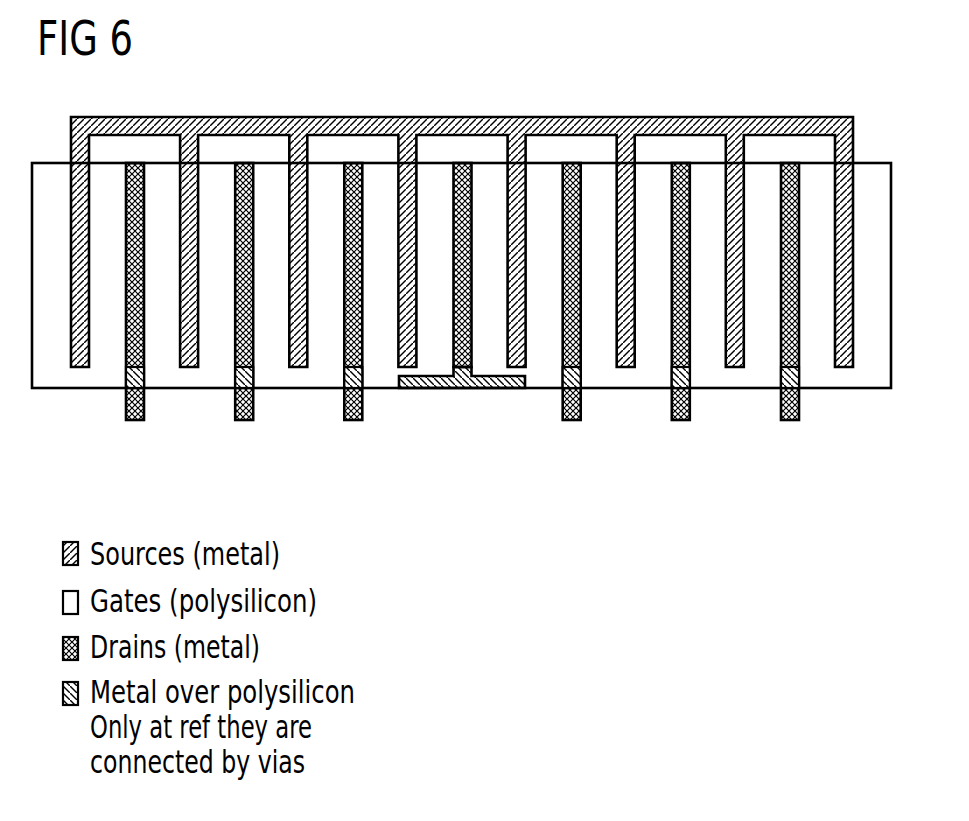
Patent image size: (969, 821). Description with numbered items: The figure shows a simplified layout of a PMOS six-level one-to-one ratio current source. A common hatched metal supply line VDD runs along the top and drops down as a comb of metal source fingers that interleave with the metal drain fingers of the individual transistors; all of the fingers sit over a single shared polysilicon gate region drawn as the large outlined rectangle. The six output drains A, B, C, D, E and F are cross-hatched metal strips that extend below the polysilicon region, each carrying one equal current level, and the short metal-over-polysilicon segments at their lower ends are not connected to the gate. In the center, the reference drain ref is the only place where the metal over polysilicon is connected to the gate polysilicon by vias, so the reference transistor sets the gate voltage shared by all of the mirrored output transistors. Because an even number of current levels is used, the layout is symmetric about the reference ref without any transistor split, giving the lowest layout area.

The supply voltage metal line VDD is at (542, 117).
The drain terminal of current source transistor A is at (134, 312).
The drain terminal of current source transistor B is at (244, 312).
The drain terminal of current source transistor C is at (353, 312).
The drain terminal of current source transistor D is at (572, 312).
The drain terminal of current source transistor E is at (681, 312).
The drain terminal of current source transistor F is at (790, 312).
The reference transistor drain ref is at (462, 296).